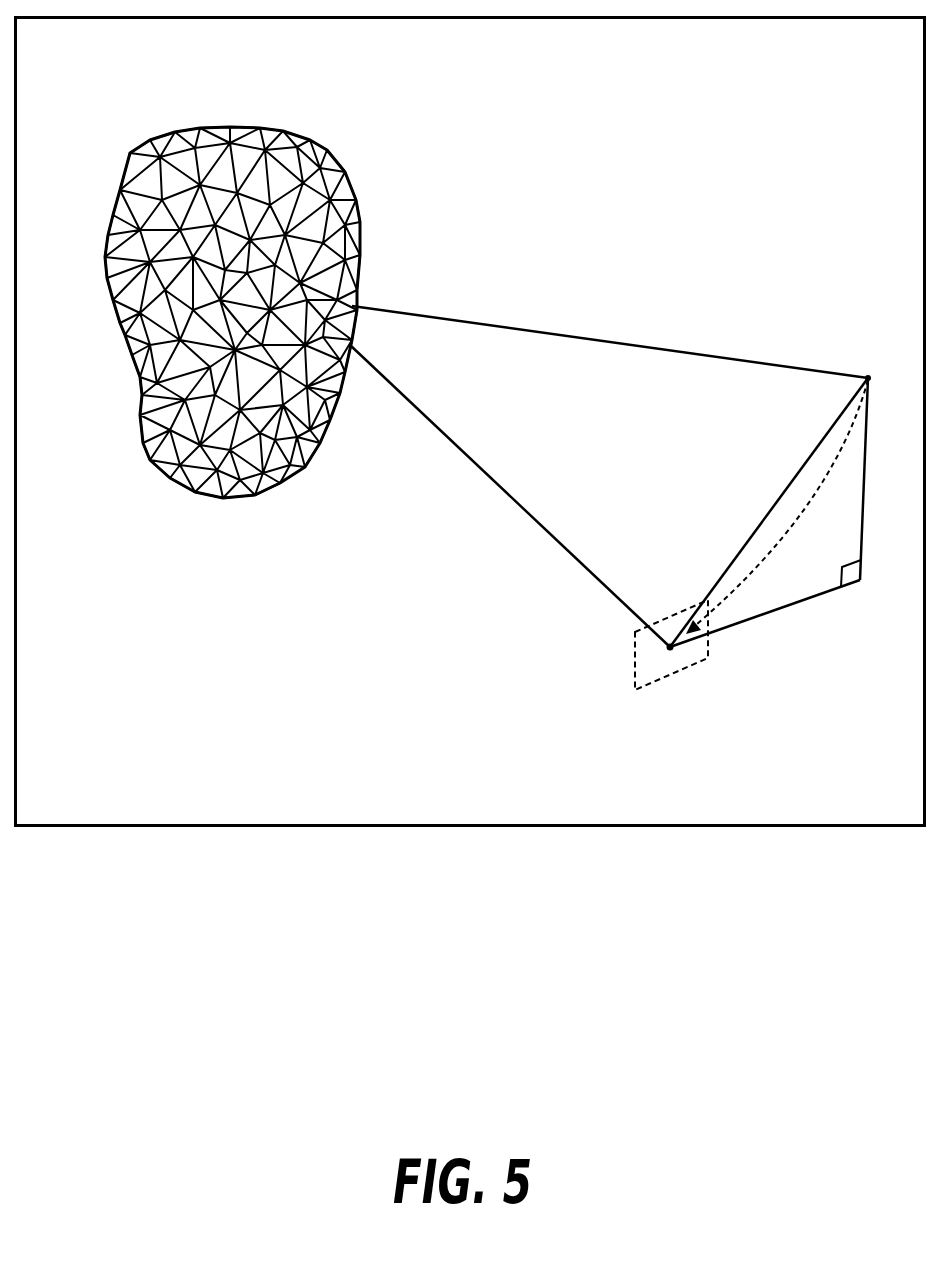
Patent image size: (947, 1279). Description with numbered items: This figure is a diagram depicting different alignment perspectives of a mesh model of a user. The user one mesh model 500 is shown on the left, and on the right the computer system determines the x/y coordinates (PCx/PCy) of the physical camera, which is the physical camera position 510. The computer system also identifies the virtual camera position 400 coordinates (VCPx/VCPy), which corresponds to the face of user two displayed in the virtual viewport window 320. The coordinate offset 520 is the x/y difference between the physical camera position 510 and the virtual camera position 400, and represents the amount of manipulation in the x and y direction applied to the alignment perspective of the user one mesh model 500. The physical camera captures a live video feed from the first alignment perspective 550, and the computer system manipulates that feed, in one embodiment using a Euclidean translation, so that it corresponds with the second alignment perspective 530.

The user 1 mesh model 500 is at (229, 562).
The first alignment perspective 550 is at (610, 260).
The second alignment perspective 530 is at (495, 496).
The physical camera position 510 is at (739, 429).
The coordinate offset 520 is at (770, 491).
The virtual camera position 400 is at (627, 594).
The virtual viewport window 320 is at (760, 691).